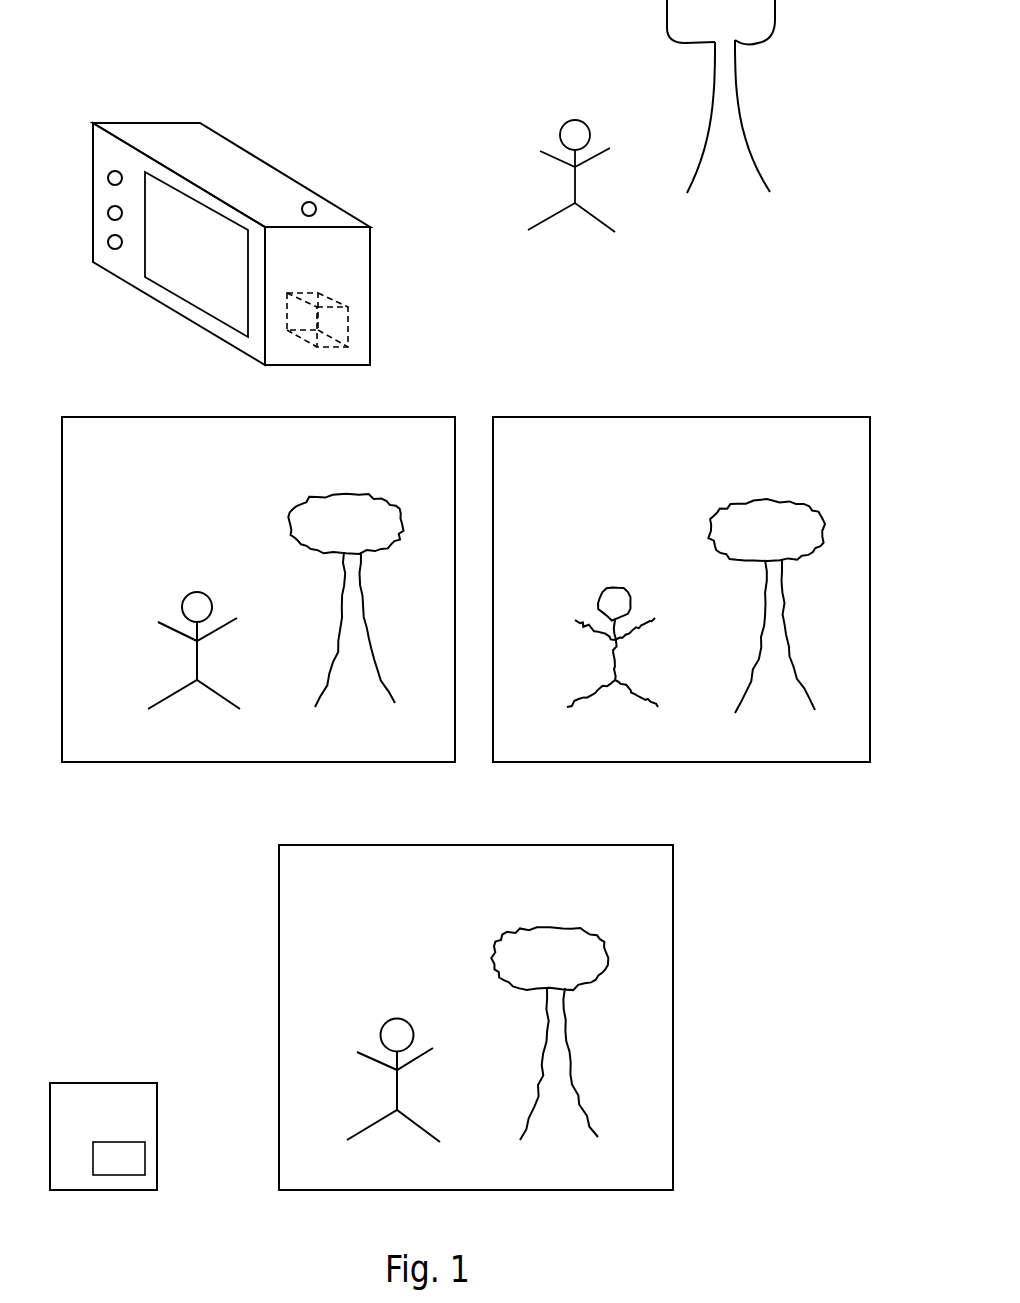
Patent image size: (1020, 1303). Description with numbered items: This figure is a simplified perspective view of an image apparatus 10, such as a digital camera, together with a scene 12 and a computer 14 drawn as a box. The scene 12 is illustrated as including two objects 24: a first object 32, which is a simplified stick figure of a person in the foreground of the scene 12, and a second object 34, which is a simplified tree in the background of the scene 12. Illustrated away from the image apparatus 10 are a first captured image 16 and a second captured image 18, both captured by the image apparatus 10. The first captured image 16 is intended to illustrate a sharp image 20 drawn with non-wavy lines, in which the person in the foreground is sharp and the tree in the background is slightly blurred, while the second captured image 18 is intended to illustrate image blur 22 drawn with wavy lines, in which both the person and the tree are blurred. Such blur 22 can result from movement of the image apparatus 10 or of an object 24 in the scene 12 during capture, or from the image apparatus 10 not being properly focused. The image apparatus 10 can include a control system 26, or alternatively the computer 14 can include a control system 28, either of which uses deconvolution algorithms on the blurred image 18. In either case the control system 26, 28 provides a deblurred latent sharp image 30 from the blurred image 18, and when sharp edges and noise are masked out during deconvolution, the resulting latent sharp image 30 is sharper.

The image apparatus 10 is at (261, 206).
The scene 12 is at (579, 129).
The computer 14 is at (77, 1124).
The first captured image 16 is at (258, 623).
The second captured image 18 is at (681, 625).
The sharp image 20 is at (225, 702).
The image blur 22 is at (657, 700).
The object 24 is at (537, 164).
The control system 26 is at (348, 327).
The control system 28 is at (103, 1170).
The latent sharp image 30 is at (279, 996).
The first object 32 is at (558, 132).
The second object 34 is at (670, 22).